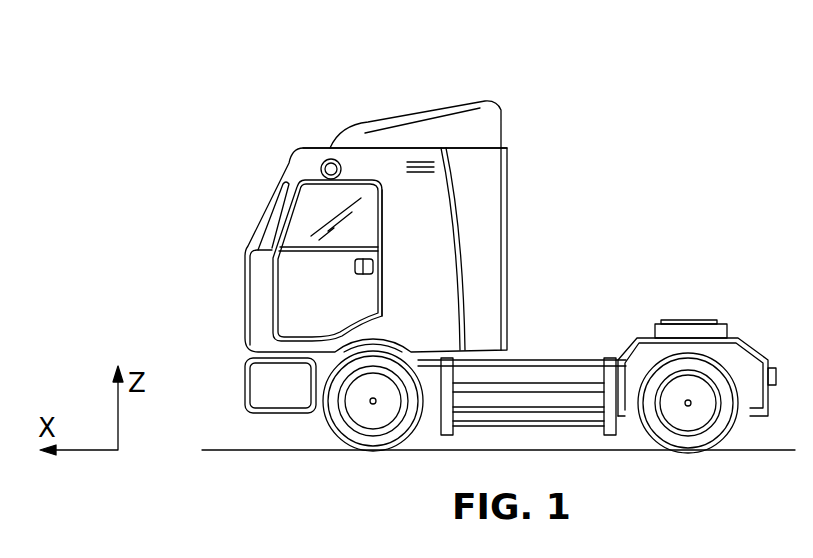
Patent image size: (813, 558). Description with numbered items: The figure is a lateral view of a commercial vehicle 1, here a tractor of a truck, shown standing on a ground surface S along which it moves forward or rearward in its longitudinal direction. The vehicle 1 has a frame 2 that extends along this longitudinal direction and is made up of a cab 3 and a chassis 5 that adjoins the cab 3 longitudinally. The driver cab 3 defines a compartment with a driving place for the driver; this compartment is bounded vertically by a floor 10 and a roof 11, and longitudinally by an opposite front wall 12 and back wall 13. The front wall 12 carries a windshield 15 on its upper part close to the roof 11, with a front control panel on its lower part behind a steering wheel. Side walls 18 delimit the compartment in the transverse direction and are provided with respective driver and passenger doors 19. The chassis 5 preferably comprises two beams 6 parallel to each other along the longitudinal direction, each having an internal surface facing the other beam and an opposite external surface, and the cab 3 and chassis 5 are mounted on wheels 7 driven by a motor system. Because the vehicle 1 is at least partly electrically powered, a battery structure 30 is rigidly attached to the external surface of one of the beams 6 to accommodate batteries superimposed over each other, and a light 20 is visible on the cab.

The commercial vehicle 1 is at (540, 95).
The frame 2 is at (543, 243).
The cab 3 is at (397, 117).
The chassis 5 is at (572, 356).
The beams 6 is at (627, 357).
The wheels 7 is at (326, 428).
The floor 10 is at (297, 343).
The roof 11 is at (313, 148).
The front wall 12 is at (247, 302).
The back wall 13 is at (464, 293).
The windshield 15 is at (272, 210).
The side walls 18 is at (388, 236).
The doors 19 is at (307, 239).
The indicator light 20 is at (317, 168).
The battery structure 30 is at (563, 410).
The ground surface S is at (222, 448).